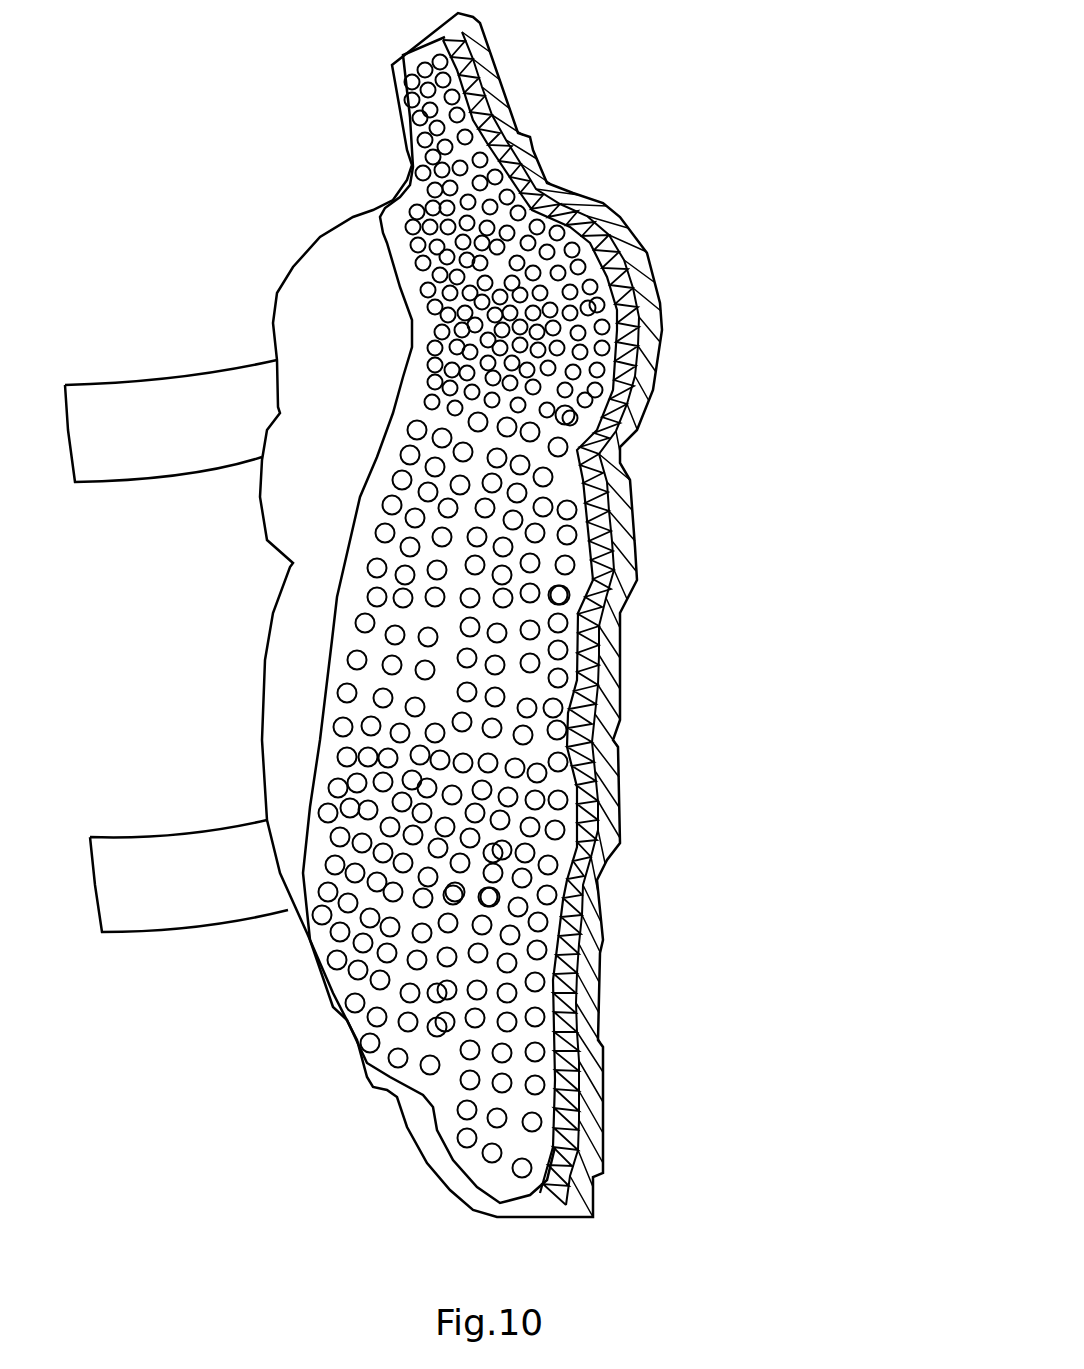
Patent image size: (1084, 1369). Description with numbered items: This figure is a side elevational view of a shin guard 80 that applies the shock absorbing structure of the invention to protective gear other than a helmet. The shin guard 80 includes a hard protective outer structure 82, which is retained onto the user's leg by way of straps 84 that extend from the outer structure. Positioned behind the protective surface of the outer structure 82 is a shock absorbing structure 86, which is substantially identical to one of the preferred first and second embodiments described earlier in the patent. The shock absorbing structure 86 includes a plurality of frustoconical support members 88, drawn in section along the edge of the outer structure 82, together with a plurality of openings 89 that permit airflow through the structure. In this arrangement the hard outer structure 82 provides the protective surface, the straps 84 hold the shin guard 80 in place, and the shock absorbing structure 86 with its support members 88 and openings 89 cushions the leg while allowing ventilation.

The shin guard 80 is at (730, 227).
The hard protective outer structure 82 is at (620, 772).
The straps 84 is at (147, 400).
The shock absorbing structure 86 is at (385, 214).
The frustoconical support members 88 is at (573, 1057).
The openings 89 is at (373, 1022).